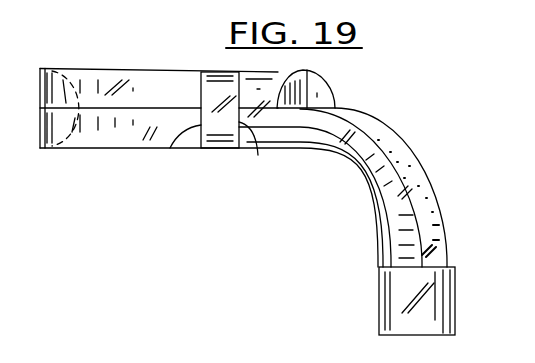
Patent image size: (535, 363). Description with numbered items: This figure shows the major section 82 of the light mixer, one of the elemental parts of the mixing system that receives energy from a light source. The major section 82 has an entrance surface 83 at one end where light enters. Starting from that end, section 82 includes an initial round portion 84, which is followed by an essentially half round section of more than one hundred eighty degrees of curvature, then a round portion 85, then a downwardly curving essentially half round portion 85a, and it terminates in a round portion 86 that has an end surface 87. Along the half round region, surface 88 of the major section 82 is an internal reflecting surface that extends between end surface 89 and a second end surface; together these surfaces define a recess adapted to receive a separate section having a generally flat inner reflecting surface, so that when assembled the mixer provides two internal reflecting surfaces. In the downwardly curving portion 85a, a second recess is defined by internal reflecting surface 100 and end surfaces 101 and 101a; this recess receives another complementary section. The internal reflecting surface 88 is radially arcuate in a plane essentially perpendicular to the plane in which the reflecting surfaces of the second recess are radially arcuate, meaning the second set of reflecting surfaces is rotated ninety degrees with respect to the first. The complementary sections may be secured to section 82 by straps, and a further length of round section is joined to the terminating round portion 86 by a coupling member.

The major section 82 is at (168, 67).
The entrance surface 83 is at (258, 138).
The initial round portion 84 is at (218, 131).
The round portion 85 is at (277, 79).
The downwardly curving essentially half round portion 85a is at (370, 177).
The round portion 86 is at (397, 283).
The end surface 87 is at (430, 335).
The internal reflecting surface 88 is at (55, 122).
The end surface 89 is at (171, 150).
The internal reflecting surface 100 is at (416, 165).
The end surface 101 is at (318, 96).
The end surface 101a is at (450, 267).